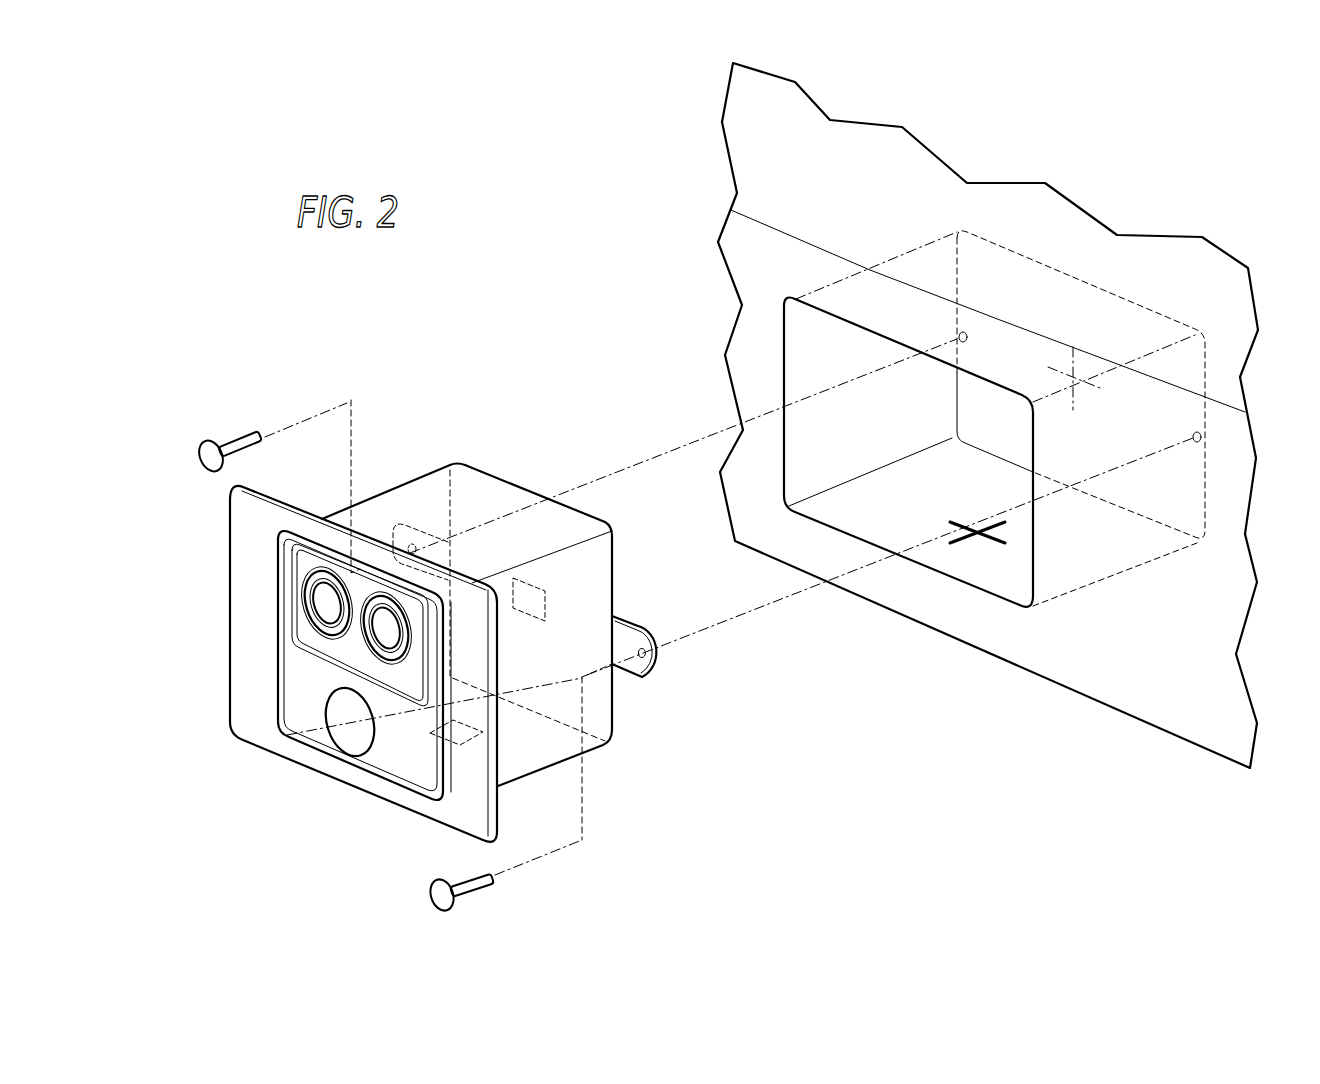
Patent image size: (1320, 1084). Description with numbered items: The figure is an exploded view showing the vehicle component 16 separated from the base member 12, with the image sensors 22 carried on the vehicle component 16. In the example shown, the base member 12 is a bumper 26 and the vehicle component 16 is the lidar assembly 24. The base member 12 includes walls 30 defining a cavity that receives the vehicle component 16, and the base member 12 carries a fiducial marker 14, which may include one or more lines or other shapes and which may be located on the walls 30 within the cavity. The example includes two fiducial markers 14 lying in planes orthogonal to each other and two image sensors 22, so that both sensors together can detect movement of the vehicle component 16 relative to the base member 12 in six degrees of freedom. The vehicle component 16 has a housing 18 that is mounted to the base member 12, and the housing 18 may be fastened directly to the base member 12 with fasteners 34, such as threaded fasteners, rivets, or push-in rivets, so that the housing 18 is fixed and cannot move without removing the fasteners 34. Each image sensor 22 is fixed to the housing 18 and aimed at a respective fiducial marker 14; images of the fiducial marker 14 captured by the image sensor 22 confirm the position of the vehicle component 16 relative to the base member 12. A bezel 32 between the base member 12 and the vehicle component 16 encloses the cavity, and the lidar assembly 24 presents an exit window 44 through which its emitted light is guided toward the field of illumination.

The base member 12 is at (988, 418).
The bumper 26 is at (1143, 669).
The fiducial marker 14 is at (1090, 360).
The walls 30 is at (818, 360).
The vehicle component 16 is at (449, 602).
The lidar assembly 24 is at (433, 437).
The housing 18 is at (600, 748).
The image sensor 22 is at (481, 714).
The bezel 32 is at (228, 610).
The fasteners 34 is at (237, 438).
The exit window 44 is at (330, 735).